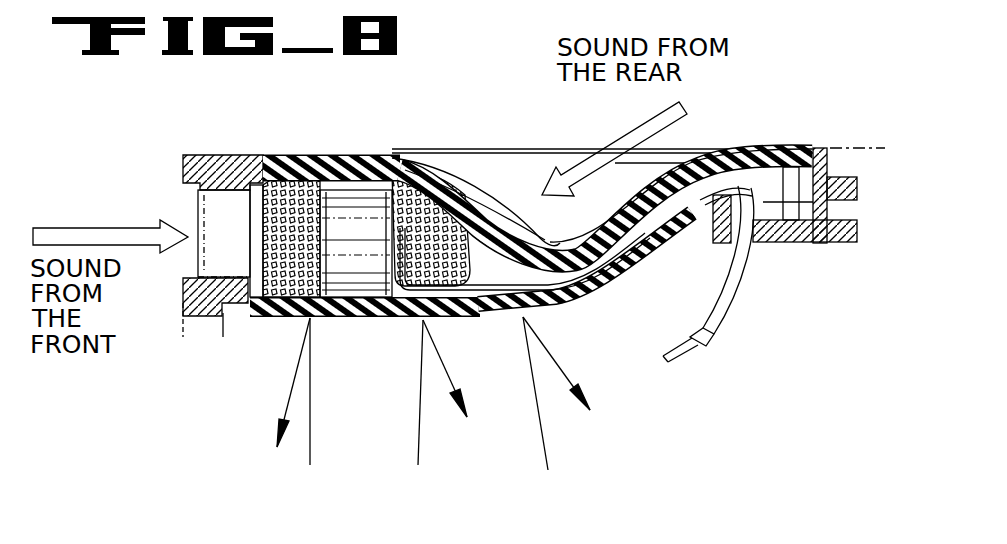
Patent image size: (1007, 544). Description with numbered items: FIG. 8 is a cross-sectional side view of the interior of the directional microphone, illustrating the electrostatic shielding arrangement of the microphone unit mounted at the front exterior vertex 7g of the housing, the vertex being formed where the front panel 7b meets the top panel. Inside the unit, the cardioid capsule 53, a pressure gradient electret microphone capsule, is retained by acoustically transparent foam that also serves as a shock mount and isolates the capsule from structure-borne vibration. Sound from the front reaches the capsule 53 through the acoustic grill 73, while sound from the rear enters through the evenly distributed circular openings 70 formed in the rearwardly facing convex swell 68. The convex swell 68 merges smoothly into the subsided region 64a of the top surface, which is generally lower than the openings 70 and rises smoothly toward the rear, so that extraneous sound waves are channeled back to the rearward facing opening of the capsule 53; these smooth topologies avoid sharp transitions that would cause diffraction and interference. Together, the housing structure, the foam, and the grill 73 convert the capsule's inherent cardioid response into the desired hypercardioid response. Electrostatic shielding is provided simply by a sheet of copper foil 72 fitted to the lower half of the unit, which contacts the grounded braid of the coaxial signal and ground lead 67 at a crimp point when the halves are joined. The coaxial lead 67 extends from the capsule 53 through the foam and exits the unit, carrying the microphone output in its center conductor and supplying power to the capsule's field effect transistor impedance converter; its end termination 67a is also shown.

The exterior vertex 7g is at (183, 163).
The acoustic grill 73 is at (190, 212).
The front panel 7b is at (185, 302).
The circular openings 70 is at (346, 160).
The cardioid capsule 53 is at (357, 258).
The copper foil 72 is at (488, 312).
The convex swell 68 is at (346, 160).
The subsided region 64a is at (815, 135).
The coaxial signal and ground lead 67 is at (715, 305).
The cable connector 67a is at (708, 338).